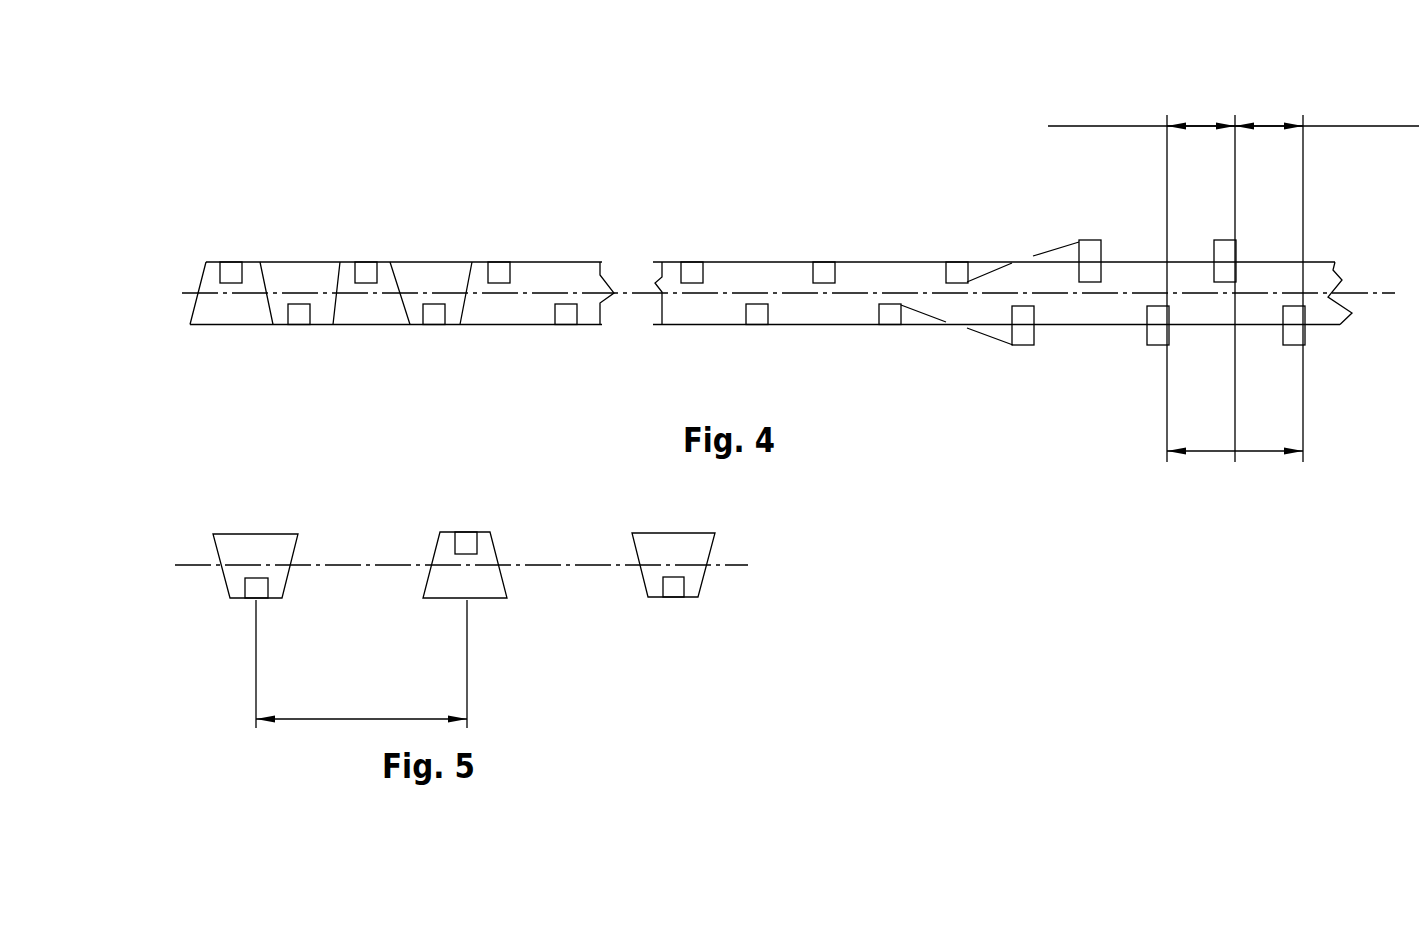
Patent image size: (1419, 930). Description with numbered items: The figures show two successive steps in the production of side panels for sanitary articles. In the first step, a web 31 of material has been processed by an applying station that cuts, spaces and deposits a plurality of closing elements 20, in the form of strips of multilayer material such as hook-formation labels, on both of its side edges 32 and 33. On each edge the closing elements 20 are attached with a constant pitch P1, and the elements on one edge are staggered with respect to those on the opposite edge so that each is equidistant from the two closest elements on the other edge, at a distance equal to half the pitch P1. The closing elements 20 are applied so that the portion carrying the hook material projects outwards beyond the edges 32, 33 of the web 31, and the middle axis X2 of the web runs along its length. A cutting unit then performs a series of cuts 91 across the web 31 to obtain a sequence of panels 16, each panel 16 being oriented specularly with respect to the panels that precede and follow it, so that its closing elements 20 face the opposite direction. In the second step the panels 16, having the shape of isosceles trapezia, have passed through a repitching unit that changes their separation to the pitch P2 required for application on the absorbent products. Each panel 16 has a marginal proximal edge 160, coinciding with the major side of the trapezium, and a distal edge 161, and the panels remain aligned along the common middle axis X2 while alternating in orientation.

In FIG. 4, the panel 16 is at (223, 305).
In FIG. 4, the cut 91 is at (205, 285).
In FIG. 4, the web 31 is at (783, 292).
In FIG. 4, the side edge 33 is at (910, 262).
In FIG. 4, the side edge 32 is at (1076, 325).
In FIG. 4, the closing element 20 is at (1023, 347).
In FIG. 4, the middle axis X2 is at (635, 293).
In FIG. 5, the middle axis X2 is at (748, 564).
In FIG. 4, the pitch P1 is at (1233, 279).
In FIG. 5, the marginal edge 160 is at (253, 532).
In FIG. 5, the distal edge 161 is at (468, 532).
In FIG. 5, the pitch P2 is at (361, 664).